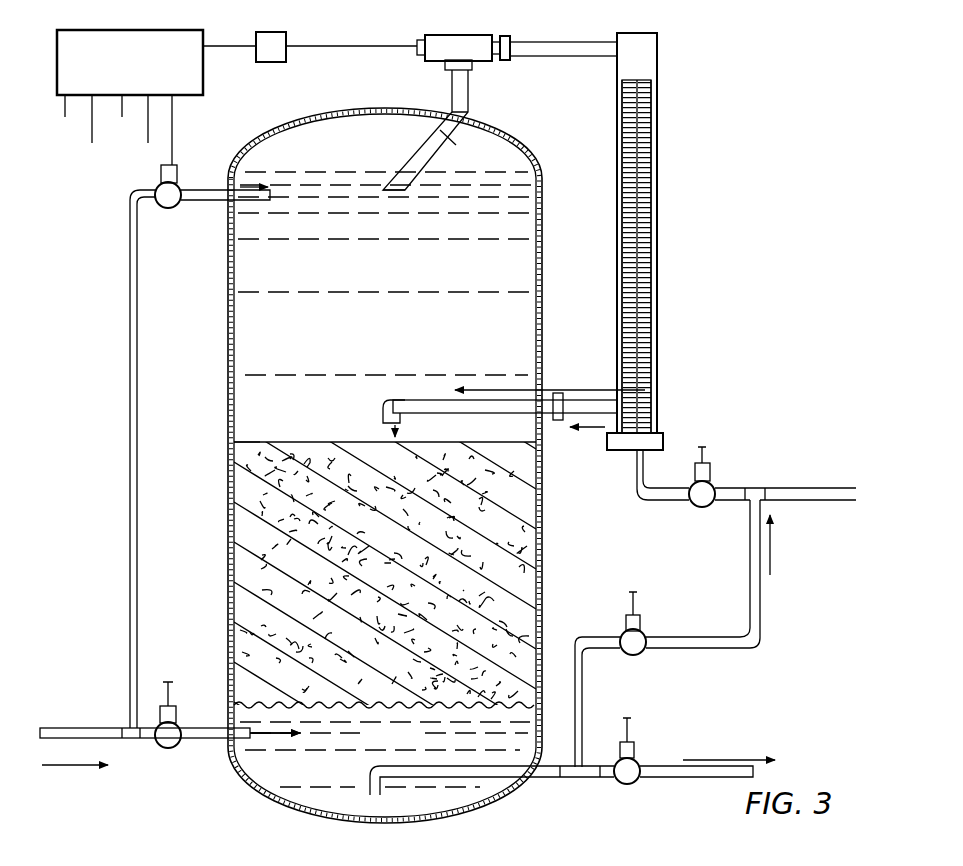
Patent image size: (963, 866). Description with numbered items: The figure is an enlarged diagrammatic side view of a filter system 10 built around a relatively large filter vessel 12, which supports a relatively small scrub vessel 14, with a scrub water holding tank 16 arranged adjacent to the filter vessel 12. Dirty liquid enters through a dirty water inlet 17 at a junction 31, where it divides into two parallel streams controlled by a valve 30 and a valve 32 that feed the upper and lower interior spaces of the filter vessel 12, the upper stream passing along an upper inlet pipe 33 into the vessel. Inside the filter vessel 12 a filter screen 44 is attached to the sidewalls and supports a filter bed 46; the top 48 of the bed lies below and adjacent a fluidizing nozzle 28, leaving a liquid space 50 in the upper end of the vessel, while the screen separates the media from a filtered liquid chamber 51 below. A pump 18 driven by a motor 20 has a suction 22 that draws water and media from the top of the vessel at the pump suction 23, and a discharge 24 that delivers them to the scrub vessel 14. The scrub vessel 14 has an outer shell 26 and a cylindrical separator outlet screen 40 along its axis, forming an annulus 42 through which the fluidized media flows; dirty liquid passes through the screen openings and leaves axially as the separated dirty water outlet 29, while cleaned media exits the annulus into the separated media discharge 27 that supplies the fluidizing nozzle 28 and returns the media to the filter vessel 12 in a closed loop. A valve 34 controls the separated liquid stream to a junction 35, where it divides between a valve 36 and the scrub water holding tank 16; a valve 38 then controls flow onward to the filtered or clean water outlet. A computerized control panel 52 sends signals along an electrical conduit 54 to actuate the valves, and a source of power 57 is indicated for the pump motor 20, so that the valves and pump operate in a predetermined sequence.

The filter system 10 is at (766, 128).
The filter vessel 12 is at (226, 350).
The scrub vessel 14 is at (660, 238).
The scrub water holding tank 16 is at (866, 388).
The dirty water inlet 17 is at (80, 728).
The pump 18 is at (455, 35).
The motor 20 is at (458, 48).
The pump inlet or suction 22 is at (469, 90).
The pump suction 23 is at (406, 198).
The pump outlet or discharge 24 is at (545, 57).
The outer shell 26 is at (608, 297).
The separated media discharge 27 is at (588, 400).
The fluidizing nozzle 28 is at (390, 402).
The separated dirty water outlet 29 is at (648, 480).
The valve 30 is at (157, 188).
The junction 31 is at (134, 738).
The valve 32 is at (168, 750).
The upper inlet pipe 33 is at (190, 190).
The valve 34 is at (700, 508).
The junction 35 is at (752, 490).
The valve 36 is at (644, 658).
The valve 38 is at (640, 760).
The separator outlet screen 40 is at (622, 168).
The annulus 42 is at (617, 200).
The filter screen 44 is at (332, 704).
The filter bed 46 is at (233, 598).
The top of the bed 48 is at (258, 436).
The liquid space 50 is at (266, 372).
The filtered liquid chamber 51 is at (278, 770).
The computerized control panel 52 is at (206, 32).
The electrical conduit 54 is at (172, 112).
The source of power for the pump motor 57 is at (304, 46).